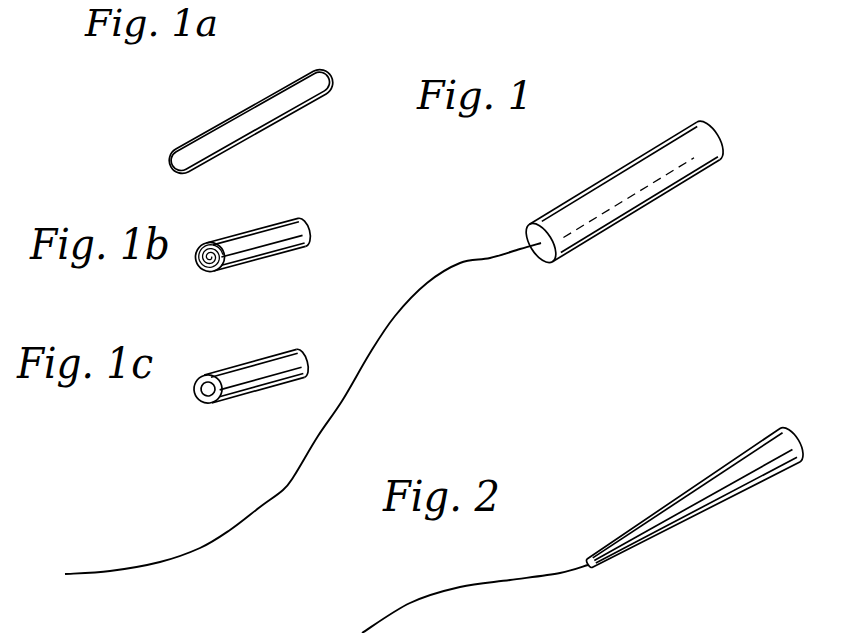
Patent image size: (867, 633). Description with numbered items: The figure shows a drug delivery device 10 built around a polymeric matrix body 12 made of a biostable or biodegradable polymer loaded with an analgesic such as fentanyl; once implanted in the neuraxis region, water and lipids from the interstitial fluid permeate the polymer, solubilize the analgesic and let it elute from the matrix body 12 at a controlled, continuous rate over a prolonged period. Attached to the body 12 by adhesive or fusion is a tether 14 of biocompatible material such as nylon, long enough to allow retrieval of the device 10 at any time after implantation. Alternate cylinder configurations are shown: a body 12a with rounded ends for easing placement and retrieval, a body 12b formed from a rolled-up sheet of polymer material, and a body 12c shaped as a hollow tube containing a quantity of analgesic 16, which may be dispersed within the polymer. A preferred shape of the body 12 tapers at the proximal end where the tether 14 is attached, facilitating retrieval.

In FIG. 1A, the device 10 is at (233, 121).
In FIG. 1B, the device 10 is at (270, 217).
In FIG. 1C, the device 10 is at (245, 378).
In FIG. 1, the device 10 is at (612, 191).
In FIG. 2, the device 10 is at (685, 502).
In FIG. 1, the polymeric matrix body 12 is at (653, 149).
In FIG. 2, the polymeric matrix body 12 is at (703, 482).
In FIG. 1A, the body 12a is at (267, 100).
In FIG. 1B, the body 12b is at (294, 217).
In FIG. 1C, the body 12c is at (267, 366).
In FIG. 1, the tether 14 is at (300, 467).
In FIG. 1C, the analgesic 16 is at (207, 388).